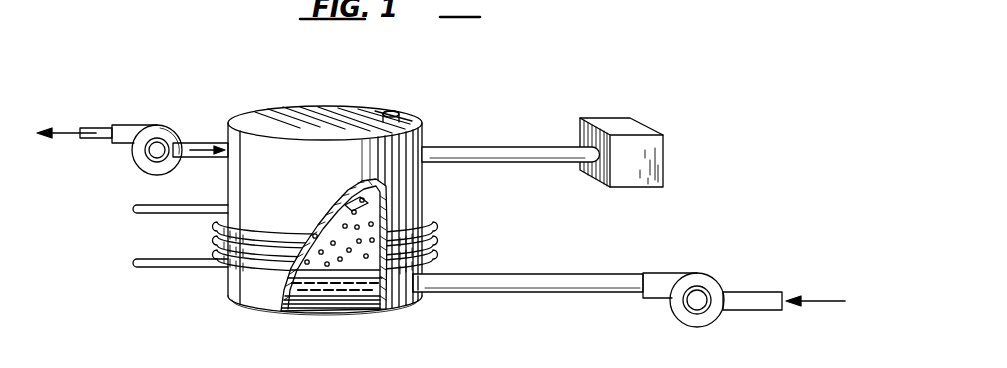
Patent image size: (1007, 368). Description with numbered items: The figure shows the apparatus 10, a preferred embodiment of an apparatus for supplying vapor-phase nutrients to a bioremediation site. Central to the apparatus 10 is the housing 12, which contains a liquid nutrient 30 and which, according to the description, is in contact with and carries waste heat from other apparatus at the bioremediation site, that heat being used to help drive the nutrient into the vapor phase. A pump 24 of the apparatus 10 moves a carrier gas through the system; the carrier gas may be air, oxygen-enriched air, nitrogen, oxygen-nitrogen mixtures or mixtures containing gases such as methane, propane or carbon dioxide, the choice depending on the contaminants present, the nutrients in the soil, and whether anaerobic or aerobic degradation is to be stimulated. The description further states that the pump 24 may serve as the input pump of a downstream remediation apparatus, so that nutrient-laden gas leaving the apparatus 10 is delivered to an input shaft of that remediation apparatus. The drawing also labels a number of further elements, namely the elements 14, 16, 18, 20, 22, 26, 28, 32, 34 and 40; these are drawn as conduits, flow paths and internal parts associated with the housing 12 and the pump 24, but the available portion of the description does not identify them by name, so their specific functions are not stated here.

The apparatus 10 is at (228, 82).
The housing 12 is at (386, 211).
The inlet 14 is at (419, 294).
The outlet conduit 16 is at (226, 146).
The heater unit 18 is at (591, 118).
The blower 20 is at (693, 276).
The supply conduit 22 is at (571, 274).
The pump 24 is at (153, 125).
The exhaust conduit 26 is at (90, 125).
The perforated plate 28 is at (345, 292).
The liquid nutrient 30 is at (318, 303).
The air flow 32 is at (346, 256).
The exhaust flow 34 is at (62, 138).
The pipes 40 is at (207, 270).